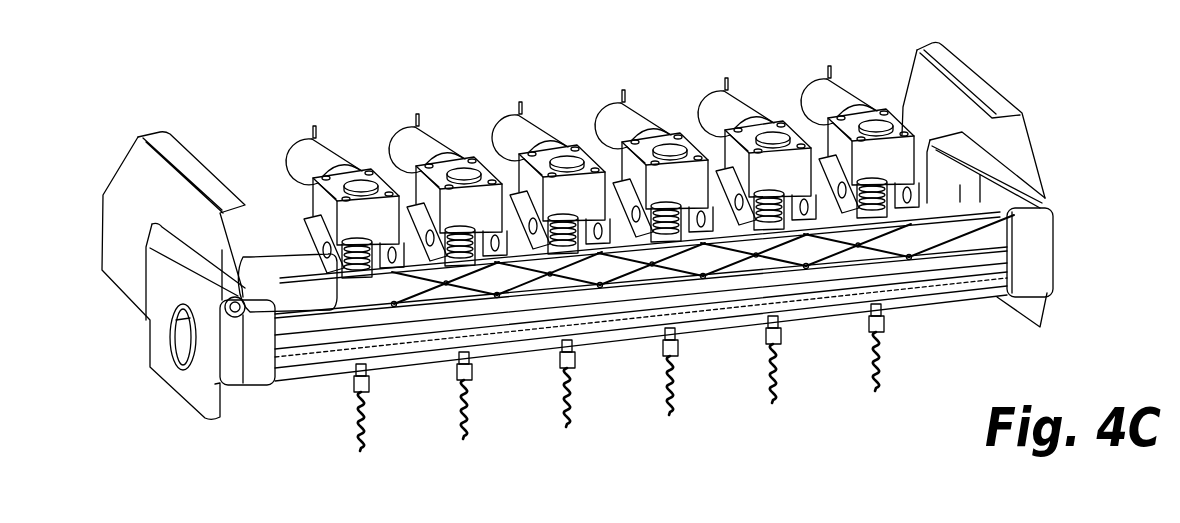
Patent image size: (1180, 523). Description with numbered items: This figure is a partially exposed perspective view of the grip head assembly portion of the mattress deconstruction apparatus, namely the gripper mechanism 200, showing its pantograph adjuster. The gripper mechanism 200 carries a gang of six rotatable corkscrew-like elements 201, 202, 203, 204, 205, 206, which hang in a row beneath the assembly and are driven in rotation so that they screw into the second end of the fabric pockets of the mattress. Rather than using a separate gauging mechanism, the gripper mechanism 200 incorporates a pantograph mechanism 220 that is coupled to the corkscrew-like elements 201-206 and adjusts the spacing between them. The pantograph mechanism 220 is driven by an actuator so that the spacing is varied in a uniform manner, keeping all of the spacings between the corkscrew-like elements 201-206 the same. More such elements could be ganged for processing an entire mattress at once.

The gripper mechanism 200 is at (220, 66).
The corkscrew-like element 201 is at (367, 402).
The corkscrew-like element 202 is at (473, 395).
The corkscrew-like element 203 is at (577, 385).
The corkscrew-like element 204 is at (680, 380).
The corkscrew-like element 205 is at (782, 375).
The corkscrew-like element 206 is at (885, 365).
The pantograph mechanism 220 is at (937, 235).